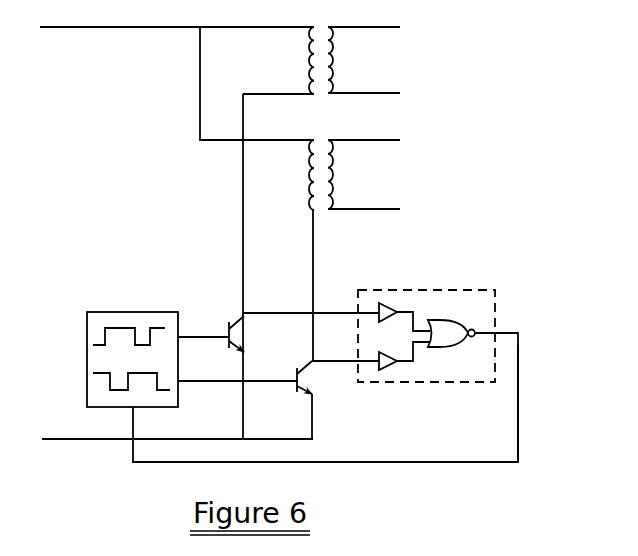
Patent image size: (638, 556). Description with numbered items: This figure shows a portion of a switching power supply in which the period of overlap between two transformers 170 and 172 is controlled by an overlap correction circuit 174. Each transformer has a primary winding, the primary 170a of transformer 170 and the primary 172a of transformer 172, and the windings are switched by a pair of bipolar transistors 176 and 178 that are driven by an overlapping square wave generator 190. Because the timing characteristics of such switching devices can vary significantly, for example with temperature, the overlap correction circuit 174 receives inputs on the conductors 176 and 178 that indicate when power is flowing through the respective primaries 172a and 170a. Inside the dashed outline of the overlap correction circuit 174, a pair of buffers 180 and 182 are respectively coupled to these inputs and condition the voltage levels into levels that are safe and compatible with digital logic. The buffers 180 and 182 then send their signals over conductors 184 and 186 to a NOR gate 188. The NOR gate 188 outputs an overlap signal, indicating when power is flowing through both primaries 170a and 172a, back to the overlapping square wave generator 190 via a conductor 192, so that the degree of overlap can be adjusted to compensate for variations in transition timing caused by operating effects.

The transformer 170 is at (333, 105).
The primary 170a is at (306, 63).
The transformer 172 is at (331, 218).
The primary 172a is at (305, 188).
The overlap correction circuit 174 is at (488, 282).
The bipolar transistor 176 is at (232, 317).
The bipolar transistor 178 is at (315, 383).
The buffer 180 is at (370, 302).
The buffer 182 is at (396, 368).
The conductor 184 is at (412, 304).
The conductor 186 is at (431, 358).
The NOR gate 188 is at (475, 323).
The overlapping square wave generator 190 is at (130, 304).
The conductor 192 is at (522, 382).